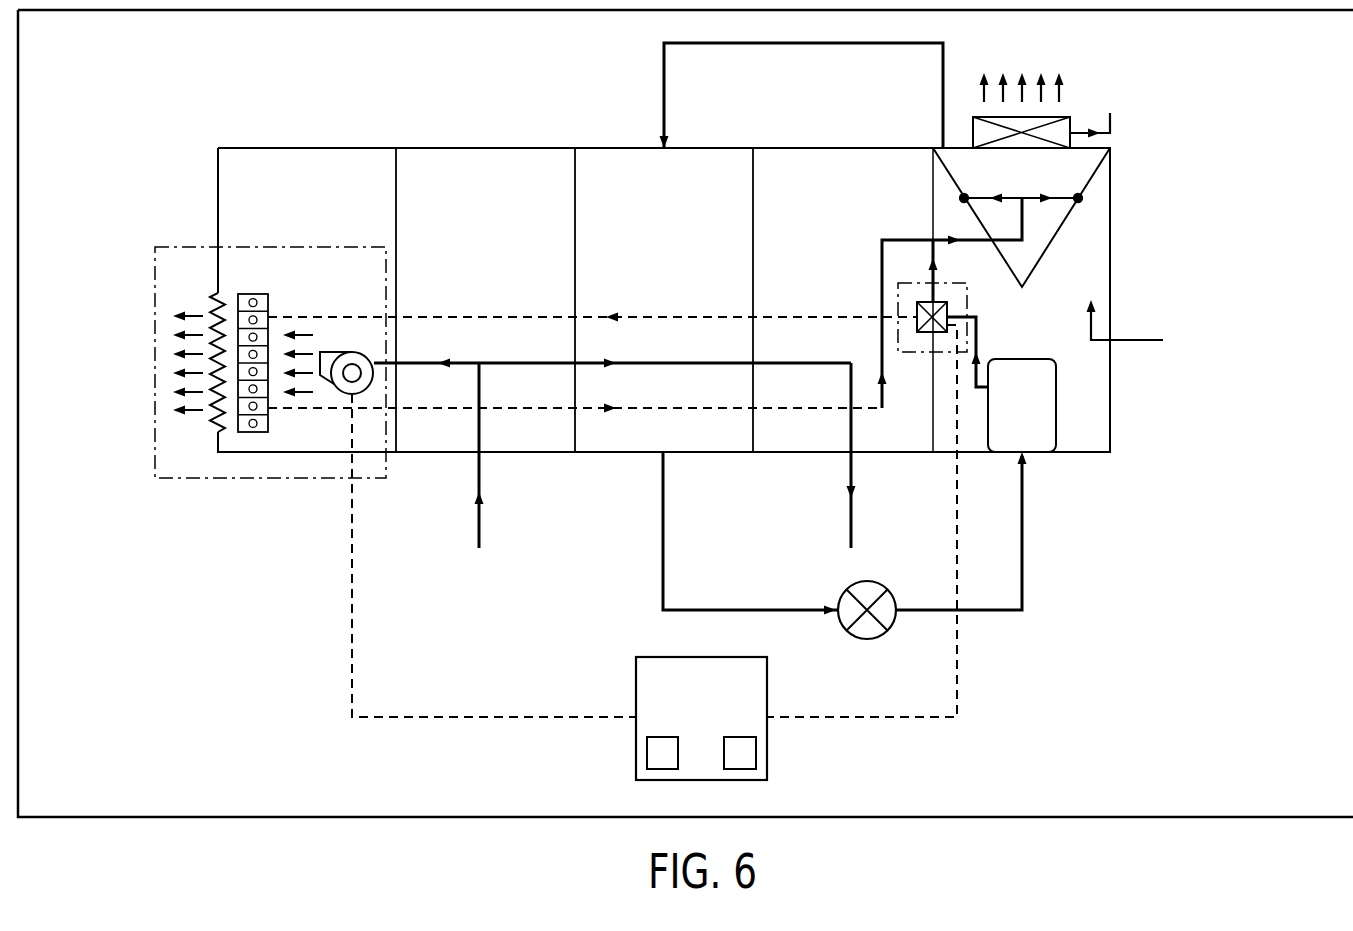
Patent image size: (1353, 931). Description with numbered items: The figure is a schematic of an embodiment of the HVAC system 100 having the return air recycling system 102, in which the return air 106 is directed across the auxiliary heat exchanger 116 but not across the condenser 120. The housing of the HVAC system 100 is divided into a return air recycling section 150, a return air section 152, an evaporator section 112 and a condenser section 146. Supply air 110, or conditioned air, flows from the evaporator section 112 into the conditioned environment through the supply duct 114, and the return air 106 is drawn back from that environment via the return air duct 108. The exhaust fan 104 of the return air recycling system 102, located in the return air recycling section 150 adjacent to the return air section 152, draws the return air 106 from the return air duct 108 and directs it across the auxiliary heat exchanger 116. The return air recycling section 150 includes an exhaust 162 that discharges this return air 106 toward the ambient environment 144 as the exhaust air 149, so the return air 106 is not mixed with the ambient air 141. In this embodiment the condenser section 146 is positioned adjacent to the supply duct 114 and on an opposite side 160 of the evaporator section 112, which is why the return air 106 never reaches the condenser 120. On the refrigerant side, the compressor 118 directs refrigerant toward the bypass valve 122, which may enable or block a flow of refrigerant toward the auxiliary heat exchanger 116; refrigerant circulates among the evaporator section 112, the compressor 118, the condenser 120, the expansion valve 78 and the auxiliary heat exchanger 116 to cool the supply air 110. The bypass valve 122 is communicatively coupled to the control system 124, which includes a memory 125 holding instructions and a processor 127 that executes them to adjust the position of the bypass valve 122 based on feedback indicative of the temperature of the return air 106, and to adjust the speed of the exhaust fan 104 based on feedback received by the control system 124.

The HVAC system 100 is at (226, 83).
The return air recycling section 150 is at (334, 174).
The return air section 152 is at (512, 174).
The evaporator section 112 is at (692, 174).
The supply duct 114 is at (897, 466).
The return air recycling system 102 is at (292, 246).
The auxiliary heat exchanger 116 is at (253, 294).
The exhaust air 149 is at (200, 314).
The exhaust 162 is at (204, 430).
The exhaust fan 104 is at (352, 352).
The return air 106 is at (306, 334).
The return air duct 108 is at (522, 467).
The supply air 110 is at (851, 528).
The bypass valve 122 is at (917, 308).
The condenser 120 is at (975, 218).
The condenser section 146 is at (1113, 80).
The opposite side 160 is at (1130, 125).
The compressor 118 is at (1056, 427).
The ambient air 141 is at (1146, 342).
The ambient environment 144 is at (104, 376).
The expansion valve 78 is at (880, 583).
The control system 124 is at (668, 657).
The memory 125 is at (662, 780).
The processor 127 is at (740, 780).